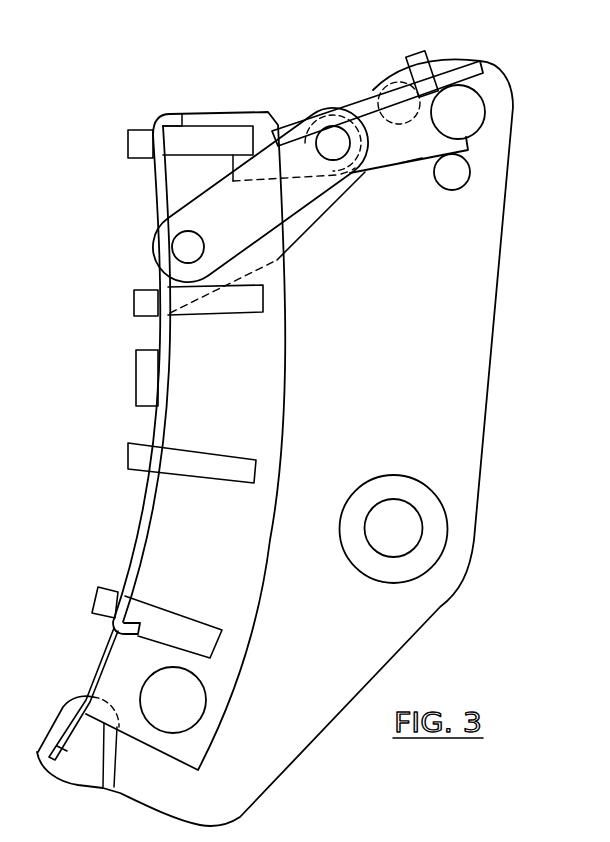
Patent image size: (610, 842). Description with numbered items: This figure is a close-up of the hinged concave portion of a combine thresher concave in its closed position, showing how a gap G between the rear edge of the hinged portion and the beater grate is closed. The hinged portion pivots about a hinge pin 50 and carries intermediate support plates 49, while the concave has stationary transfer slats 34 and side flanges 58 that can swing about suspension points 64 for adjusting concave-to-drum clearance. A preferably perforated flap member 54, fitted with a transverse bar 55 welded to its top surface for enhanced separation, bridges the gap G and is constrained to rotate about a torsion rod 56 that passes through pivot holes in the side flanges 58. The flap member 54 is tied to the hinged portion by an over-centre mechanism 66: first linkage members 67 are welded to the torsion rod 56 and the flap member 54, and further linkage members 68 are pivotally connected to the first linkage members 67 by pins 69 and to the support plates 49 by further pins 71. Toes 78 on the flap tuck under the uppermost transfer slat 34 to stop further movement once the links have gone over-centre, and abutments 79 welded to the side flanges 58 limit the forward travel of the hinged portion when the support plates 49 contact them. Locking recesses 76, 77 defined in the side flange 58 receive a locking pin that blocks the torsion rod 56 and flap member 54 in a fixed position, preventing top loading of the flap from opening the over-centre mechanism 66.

The transfer slat 34 is at (140, 150).
The intermediate support plate 49 is at (268, 360).
The hinge pin 50 is at (186, 712).
The flap member 54 is at (358, 115).
The transverse bar 55 is at (408, 57).
The torsion rod 56 is at (470, 124).
The side flange 58 is at (428, 387).
The suspension point 64 is at (410, 529).
The over-centre mechanism 66 is at (404, 241).
The linkage member 67 is at (422, 155).
The linkage member 68 is at (214, 227).
The pin 69 is at (330, 147).
The pin 71 is at (187, 253).
The locking recess 76 is at (370, 98).
The locking recess 77 is at (458, 177).
The toe 78 is at (237, 155).
The abutment 79 is at (147, 385).
The gap G is at (279, 104).